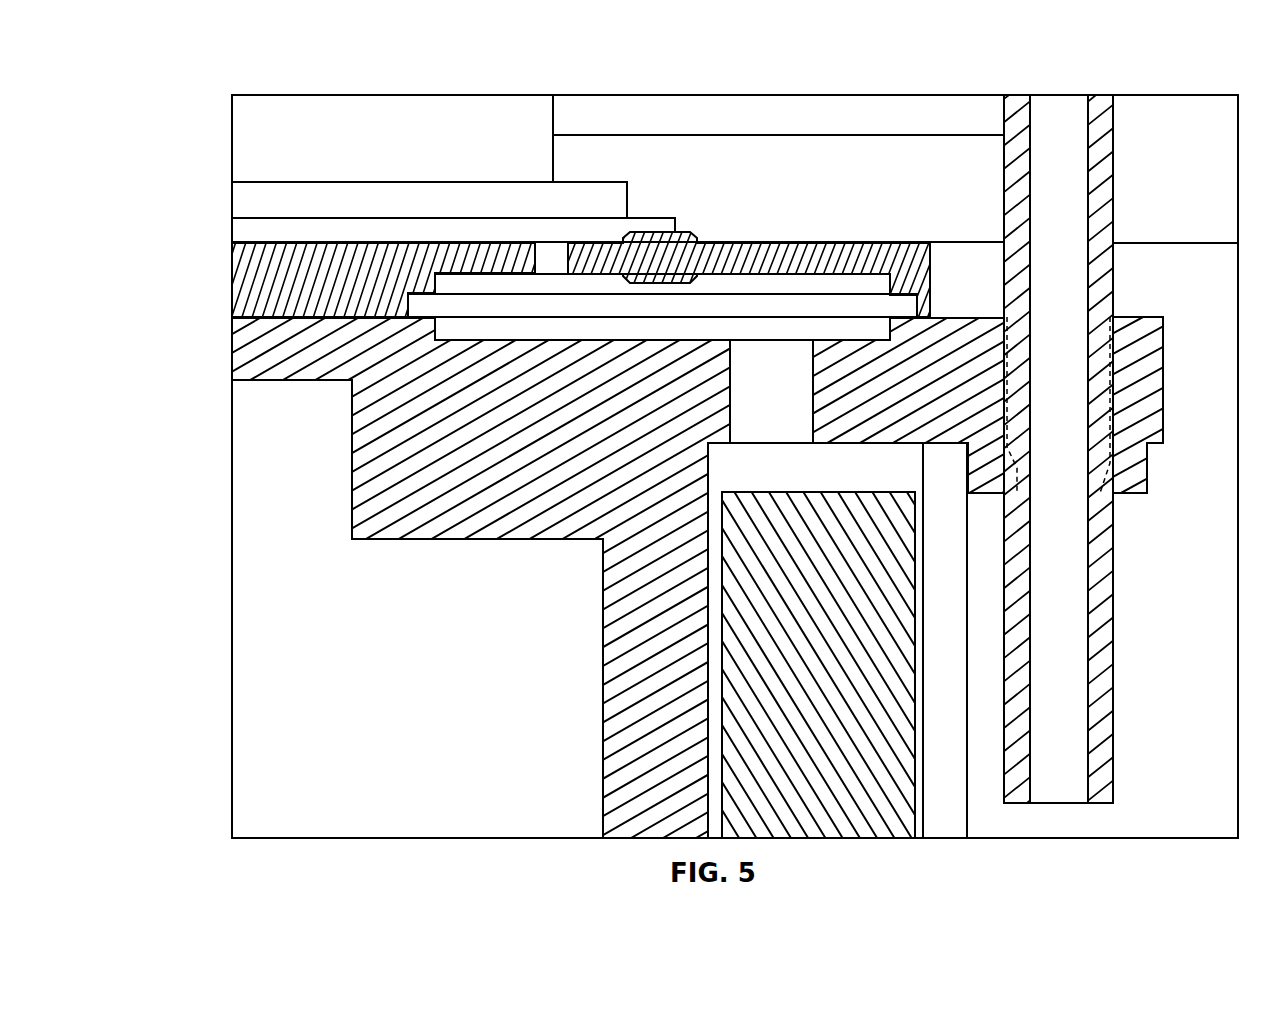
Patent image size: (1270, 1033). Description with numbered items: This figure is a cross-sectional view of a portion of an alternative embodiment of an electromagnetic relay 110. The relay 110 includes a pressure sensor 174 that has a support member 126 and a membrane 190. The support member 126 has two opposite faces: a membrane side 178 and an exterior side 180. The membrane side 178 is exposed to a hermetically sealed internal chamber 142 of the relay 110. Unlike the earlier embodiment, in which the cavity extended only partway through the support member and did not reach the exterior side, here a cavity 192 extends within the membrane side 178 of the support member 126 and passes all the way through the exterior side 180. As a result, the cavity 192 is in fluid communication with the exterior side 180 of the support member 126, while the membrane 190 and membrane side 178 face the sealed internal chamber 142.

The electromagnetic relay 110 is at (981, 63).
The support member 126 is at (252, 283).
The internal chamber 142 is at (987, 821).
The pressure sensor 174 is at (776, 229).
The membrane side 178 is at (294, 347).
The exterior side 180 is at (320, 226).
The membrane 190 is at (487, 329).
The cavity 192 is at (489, 278).